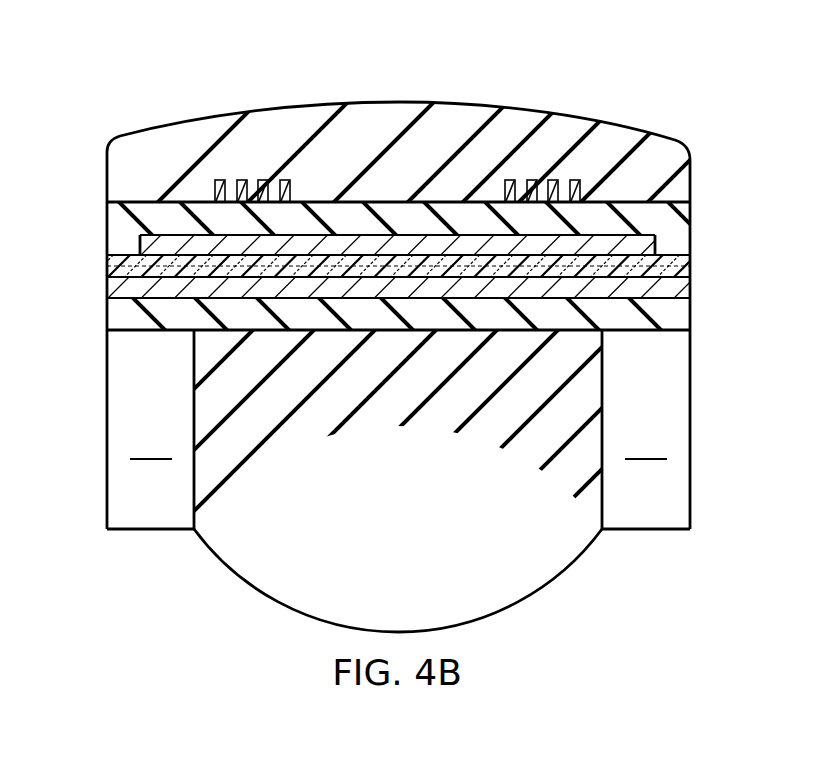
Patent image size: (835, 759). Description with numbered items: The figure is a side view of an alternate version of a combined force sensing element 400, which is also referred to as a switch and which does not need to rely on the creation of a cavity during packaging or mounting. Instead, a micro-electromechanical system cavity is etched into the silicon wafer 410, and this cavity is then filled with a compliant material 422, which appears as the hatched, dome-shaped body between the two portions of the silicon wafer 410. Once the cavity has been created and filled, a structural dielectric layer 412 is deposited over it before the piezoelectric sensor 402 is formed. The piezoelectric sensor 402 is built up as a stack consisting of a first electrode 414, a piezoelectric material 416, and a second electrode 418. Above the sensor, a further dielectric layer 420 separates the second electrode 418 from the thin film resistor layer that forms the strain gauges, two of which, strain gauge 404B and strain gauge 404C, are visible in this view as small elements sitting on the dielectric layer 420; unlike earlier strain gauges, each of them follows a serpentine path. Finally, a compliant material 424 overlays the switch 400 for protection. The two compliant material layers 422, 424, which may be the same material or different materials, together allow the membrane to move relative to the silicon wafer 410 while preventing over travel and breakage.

The combined force sensing element 400 is at (633, 96).
The piezoelectric sensor 402 is at (102, 235).
The strain gauge 404B is at (538, 156).
The strain gauge 404C is at (242, 156).
The silicon wafer 410 is at (398, 430).
The structural dielectric layer 412 is at (113, 315).
The first electrode 414 is at (680, 290).
The piezoelectric material 416 is at (680, 268).
The second electrode 418 is at (650, 244).
The dielectric layer 420 is at (113, 225).
The compliant material 422 is at (547, 572).
The compliant material 424 is at (396, 113).